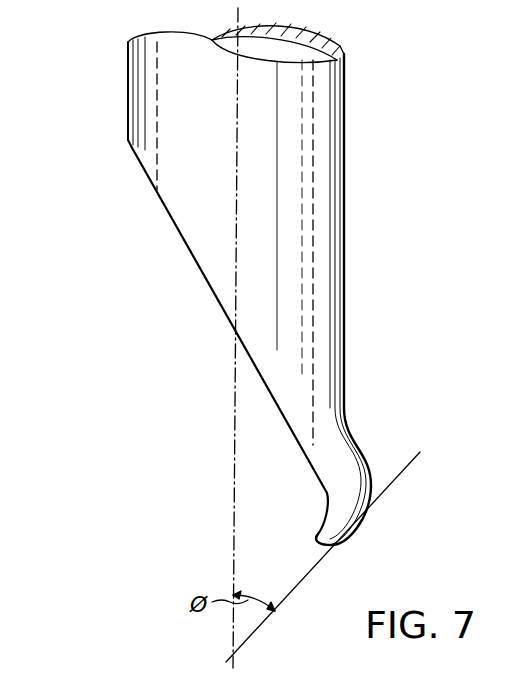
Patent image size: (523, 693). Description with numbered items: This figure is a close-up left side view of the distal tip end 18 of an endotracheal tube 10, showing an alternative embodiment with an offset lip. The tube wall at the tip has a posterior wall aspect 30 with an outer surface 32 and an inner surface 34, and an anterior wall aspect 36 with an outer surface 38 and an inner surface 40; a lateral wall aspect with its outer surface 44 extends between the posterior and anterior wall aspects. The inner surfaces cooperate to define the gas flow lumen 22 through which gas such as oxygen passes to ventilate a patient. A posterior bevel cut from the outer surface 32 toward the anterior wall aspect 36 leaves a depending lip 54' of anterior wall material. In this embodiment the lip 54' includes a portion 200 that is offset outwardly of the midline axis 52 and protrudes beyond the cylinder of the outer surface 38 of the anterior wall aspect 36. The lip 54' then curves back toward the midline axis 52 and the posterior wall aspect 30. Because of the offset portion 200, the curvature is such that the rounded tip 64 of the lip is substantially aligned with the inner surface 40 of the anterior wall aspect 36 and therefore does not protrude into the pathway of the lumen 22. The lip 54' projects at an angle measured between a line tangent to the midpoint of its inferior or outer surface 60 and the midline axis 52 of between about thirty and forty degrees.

The endotracheal tube 10 is at (90, 54).
The distal tip end 18 is at (242, 289).
The gas flow lumen 22 is at (287, 57).
The posterior wall aspect 30 is at (147, 118).
The outer surface 32 is at (128, 92).
The inner surface 34 is at (157, 104).
The anterior wall aspect 36 is at (331, 91).
The outer surface 38 is at (344, 116).
The inner surface 40 is at (313, 122).
The outer surface 44 is at (224, 181).
The midline axis 52 is at (236, 405).
The lip 54' is at (330, 557).
The outer surface 60 is at (377, 314).
The rounded bottom 64 is at (313, 538).
The offset portion 200 is at (363, 458).